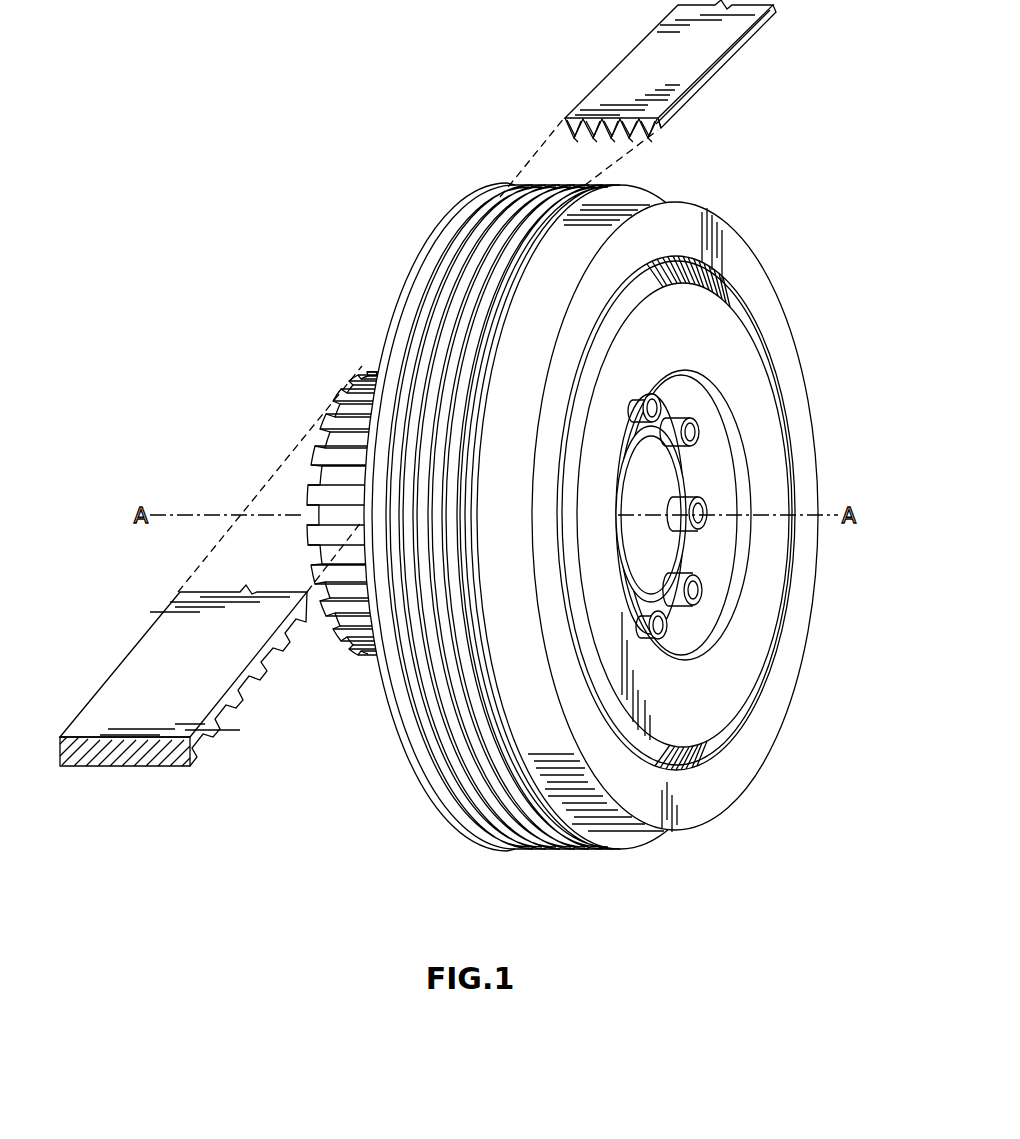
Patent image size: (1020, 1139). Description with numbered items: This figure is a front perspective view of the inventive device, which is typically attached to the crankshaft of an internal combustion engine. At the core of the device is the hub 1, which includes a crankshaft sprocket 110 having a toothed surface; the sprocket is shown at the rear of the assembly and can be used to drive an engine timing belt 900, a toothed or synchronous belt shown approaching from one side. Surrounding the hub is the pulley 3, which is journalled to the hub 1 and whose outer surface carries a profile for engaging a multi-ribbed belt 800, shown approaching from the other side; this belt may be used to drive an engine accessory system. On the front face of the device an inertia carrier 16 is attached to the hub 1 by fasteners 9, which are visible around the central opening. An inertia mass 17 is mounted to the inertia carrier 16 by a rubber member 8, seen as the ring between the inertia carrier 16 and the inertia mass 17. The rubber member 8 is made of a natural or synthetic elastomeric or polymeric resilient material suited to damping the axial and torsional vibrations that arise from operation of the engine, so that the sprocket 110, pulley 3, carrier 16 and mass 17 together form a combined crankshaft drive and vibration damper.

The hub 1 is at (303, 490).
The pulley 3 is at (488, 192).
The rubber member 8 is at (705, 768).
The fasteners 9 is at (693, 432).
The inertia carrier 16 is at (758, 599).
The inertia mass 17 is at (770, 285).
The crankshaft sprocket 110 is at (302, 543).
The multi-ribbed belt 800 is at (665, 62).
The timing belt 900 is at (168, 640).